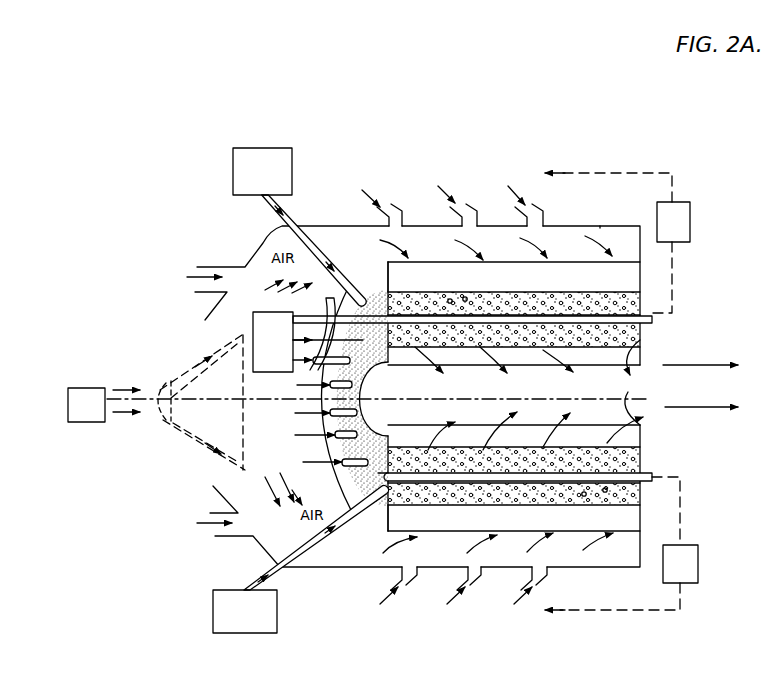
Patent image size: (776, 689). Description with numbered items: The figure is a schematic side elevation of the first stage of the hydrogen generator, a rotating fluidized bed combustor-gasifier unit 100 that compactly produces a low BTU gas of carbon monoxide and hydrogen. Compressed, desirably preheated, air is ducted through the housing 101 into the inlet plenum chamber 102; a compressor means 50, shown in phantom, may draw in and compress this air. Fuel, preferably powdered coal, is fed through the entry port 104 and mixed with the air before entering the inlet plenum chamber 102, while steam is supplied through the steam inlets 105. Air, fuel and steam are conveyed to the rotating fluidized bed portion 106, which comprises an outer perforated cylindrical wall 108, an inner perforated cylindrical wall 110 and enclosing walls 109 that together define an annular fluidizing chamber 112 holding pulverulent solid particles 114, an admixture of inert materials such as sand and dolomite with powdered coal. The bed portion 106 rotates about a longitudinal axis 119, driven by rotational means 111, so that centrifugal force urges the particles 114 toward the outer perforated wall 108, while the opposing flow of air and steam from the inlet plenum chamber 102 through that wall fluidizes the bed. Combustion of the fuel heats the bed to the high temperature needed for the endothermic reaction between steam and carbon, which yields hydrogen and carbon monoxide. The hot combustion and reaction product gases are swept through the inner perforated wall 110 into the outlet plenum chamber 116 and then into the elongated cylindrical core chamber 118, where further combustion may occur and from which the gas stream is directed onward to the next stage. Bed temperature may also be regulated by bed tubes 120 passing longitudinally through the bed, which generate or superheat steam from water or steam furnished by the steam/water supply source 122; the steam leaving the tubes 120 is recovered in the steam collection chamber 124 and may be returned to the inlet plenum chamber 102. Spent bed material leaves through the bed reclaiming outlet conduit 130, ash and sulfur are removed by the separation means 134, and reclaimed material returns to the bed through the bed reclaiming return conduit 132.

The compressor means 50 is at (190, 362).
The combustor-gasifier unit 100 is at (238, 234).
The housing 101 is at (600, 229).
The inlet plenum chamber 102 is at (440, 264).
The entry port 104 is at (199, 267).
The steam inlets 105 is at (387, 214).
The rotating fluidized bed portion 106 is at (648, 303).
The outer perforated cylindrical wall 108 is at (590, 291).
The enclosing walls 109 is at (386, 268).
The inner perforated cylindrical wall 110 is at (458, 356).
The rotational means 111 is at (96, 414).
The annular fluidizing chamber 112 is at (640, 340).
The pulverulent solid particles 114 is at (451, 299).
The outlet plenum chamber 116 is at (533, 352).
The core chamber 118 is at (576, 384).
The longitudinal axis 119 is at (148, 395).
The bed tubes 120 is at (370, 360).
The steam/water supply source 122 is at (261, 352).
The steam collection chamber 124 is at (686, 234).
The bed reclaiming outlet conduit 130 is at (306, 568).
The bed reclaiming return conduit 132 is at (300, 228).
The separation means 134 is at (275, 182).